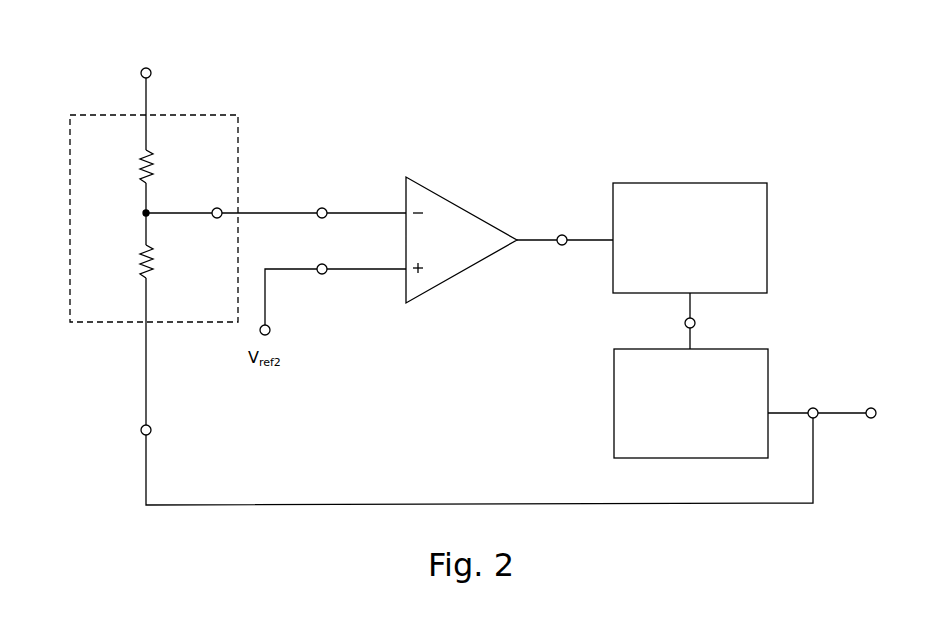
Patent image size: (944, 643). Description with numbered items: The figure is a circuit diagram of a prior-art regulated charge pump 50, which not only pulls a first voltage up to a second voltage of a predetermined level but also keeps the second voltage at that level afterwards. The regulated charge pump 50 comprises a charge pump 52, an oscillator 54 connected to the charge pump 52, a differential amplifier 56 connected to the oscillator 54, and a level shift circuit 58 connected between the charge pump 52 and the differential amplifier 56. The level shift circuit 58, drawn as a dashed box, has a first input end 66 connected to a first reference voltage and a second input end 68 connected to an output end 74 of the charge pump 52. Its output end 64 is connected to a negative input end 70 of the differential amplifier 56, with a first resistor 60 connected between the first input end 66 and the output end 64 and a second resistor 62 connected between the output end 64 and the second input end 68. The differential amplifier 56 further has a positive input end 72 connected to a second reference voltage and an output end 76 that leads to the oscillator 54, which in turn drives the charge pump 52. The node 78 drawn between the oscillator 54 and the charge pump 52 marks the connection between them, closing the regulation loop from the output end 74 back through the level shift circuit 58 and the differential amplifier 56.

The regulated charge pump 50 is at (652, 86).
The charge pump 52 is at (733, 349).
The oscillator 54 is at (732, 183).
The differential amplifier 56 is at (452, 198).
The level shift circuit 58 is at (90, 113).
The first resistor 60 is at (139, 165).
The second resistor 62 is at (138, 262).
The output end 64 is at (217, 208).
The first input end 66 is at (151, 73).
The second input end 68 is at (152, 428).
The negative input end 70 is at (325, 208).
The positive input end 72 is at (322, 274).
The output end 74 is at (814, 408).
The output end 76 is at (564, 235).
The oscillator output node 78 is at (684, 322).